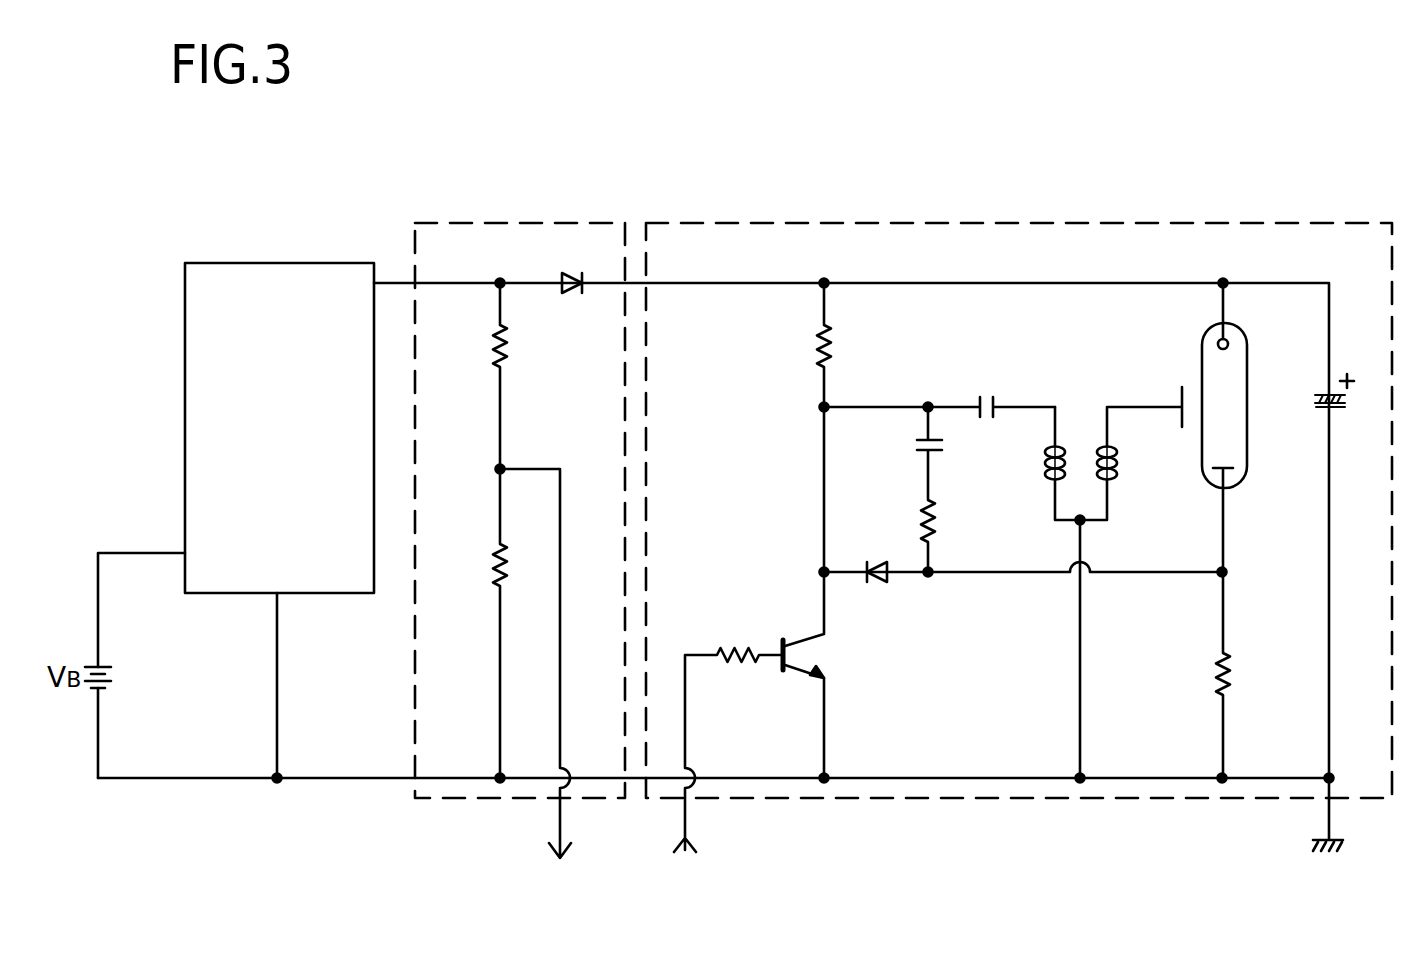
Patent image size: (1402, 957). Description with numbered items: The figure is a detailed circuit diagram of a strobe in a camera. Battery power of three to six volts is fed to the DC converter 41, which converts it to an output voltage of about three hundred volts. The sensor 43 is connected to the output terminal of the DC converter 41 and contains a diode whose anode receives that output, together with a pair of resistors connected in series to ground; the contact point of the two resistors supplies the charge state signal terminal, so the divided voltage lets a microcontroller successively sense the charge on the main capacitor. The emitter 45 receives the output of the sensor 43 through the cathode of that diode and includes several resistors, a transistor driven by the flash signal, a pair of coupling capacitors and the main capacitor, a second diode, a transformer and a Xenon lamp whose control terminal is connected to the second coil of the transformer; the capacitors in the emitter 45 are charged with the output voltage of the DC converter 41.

The DC converter 41 is at (283, 263).
The sensor 43 is at (544, 222).
The emitter 45 is at (1016, 222).